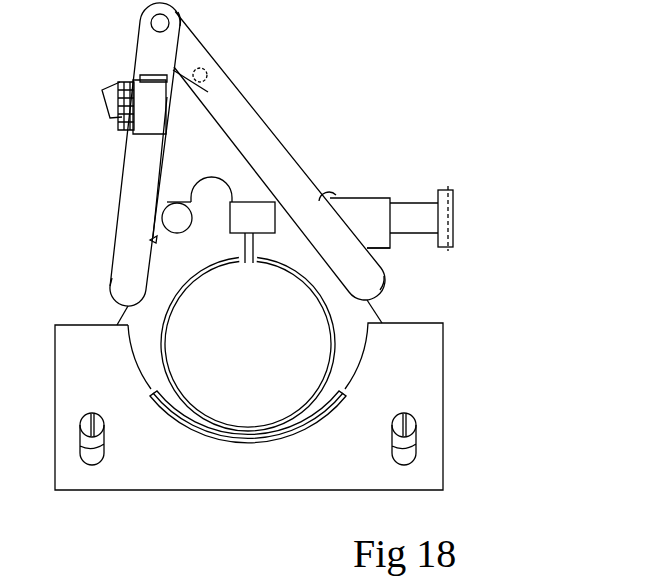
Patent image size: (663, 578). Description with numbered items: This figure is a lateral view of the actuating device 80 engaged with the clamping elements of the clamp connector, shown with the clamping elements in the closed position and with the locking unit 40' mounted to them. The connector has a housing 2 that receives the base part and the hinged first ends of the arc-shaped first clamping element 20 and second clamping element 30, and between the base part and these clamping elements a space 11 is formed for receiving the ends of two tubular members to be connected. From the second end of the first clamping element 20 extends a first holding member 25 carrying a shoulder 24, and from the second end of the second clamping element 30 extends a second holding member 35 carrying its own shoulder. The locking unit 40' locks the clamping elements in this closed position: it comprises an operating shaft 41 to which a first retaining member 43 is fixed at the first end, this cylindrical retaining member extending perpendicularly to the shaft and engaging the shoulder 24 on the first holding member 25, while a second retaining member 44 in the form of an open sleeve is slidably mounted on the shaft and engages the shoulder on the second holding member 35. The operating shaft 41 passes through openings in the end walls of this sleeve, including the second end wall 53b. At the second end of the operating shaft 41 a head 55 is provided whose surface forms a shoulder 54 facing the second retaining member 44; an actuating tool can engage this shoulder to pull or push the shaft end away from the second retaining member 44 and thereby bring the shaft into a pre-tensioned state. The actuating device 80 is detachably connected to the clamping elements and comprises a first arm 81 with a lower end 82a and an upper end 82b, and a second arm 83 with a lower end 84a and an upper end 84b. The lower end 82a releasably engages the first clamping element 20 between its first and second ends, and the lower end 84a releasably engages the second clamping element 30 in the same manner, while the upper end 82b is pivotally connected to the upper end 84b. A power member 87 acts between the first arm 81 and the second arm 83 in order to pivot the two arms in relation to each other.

The housing 2 is at (432, 392).
The space 11 is at (197, 382).
The first clamping element 20 is at (153, 325).
The shoulder 24 is at (185, 230).
The first holding member 25 is at (215, 190).
The second clamping element 30 is at (334, 290).
The second holding member 35 is at (325, 193).
The locking unit 40' is at (444, 185).
The operating shaft 41 is at (257, 210).
The first retaining member 43 is at (176, 228).
The second retaining member 44 is at (372, 207).
The second end wall 53b is at (392, 240).
The shoulder 54 is at (432, 190).
The head 55 is at (448, 218).
The actuating device 80 is at (288, 103).
The first arm 81 is at (138, 165).
The lower end 82a is at (100, 288).
The upper end 82b is at (128, 24).
The second arm 83 is at (263, 138).
The lower end 84a is at (404, 283).
The upper end 84b is at (199, 25).
The power member 87 is at (115, 82).